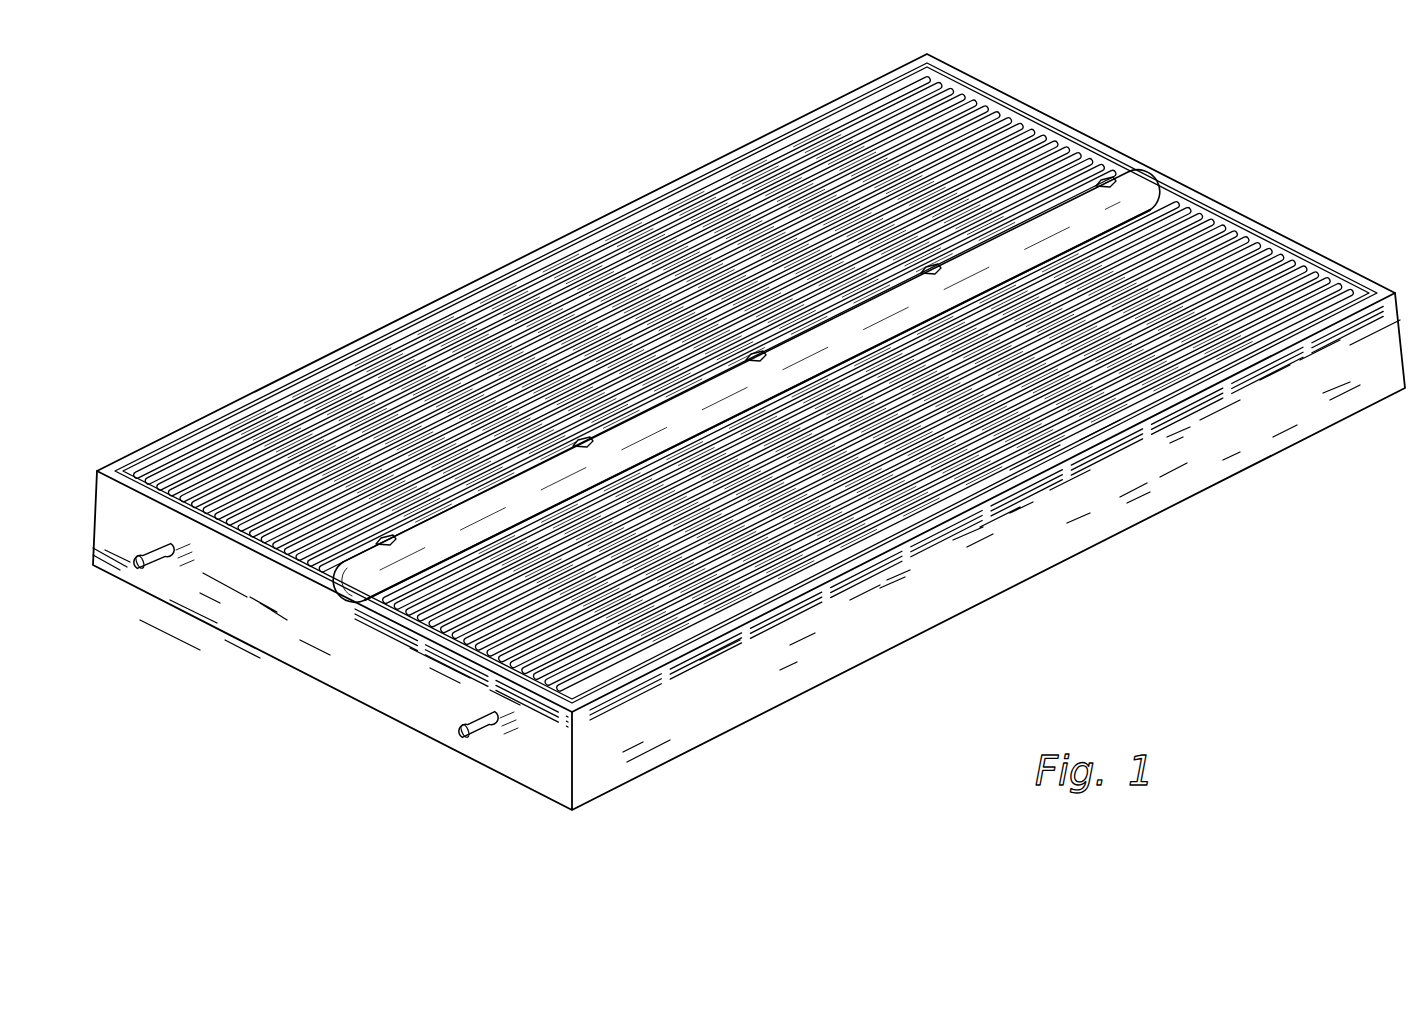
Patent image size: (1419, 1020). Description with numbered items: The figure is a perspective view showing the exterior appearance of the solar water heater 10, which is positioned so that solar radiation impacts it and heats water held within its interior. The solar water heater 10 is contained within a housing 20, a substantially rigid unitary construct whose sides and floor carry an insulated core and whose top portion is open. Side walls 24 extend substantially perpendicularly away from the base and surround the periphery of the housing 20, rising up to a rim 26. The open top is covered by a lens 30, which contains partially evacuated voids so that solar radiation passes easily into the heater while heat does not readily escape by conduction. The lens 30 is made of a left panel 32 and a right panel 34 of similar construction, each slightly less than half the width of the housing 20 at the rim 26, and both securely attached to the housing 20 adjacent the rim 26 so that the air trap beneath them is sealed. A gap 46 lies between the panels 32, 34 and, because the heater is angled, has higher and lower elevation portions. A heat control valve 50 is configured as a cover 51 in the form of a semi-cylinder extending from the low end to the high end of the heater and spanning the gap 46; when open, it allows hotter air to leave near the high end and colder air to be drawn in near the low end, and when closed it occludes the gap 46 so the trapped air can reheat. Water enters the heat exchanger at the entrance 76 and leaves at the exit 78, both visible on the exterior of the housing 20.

The solar water heater 10 is at (333, 187).
The housing 20 is at (1005, 591).
The side walls 24 is at (927, 592).
The rim 26 is at (675, 180).
The lens 30 is at (1100, 403).
The left panel 32 is at (785, 537).
The right panel 34 is at (462, 362).
The gap 46 is at (386, 607).
The heat control valve 50 is at (1065, 222).
The cover 51 is at (668, 415).
The entrance 76 is at (478, 737).
The exit 78 is at (157, 570).